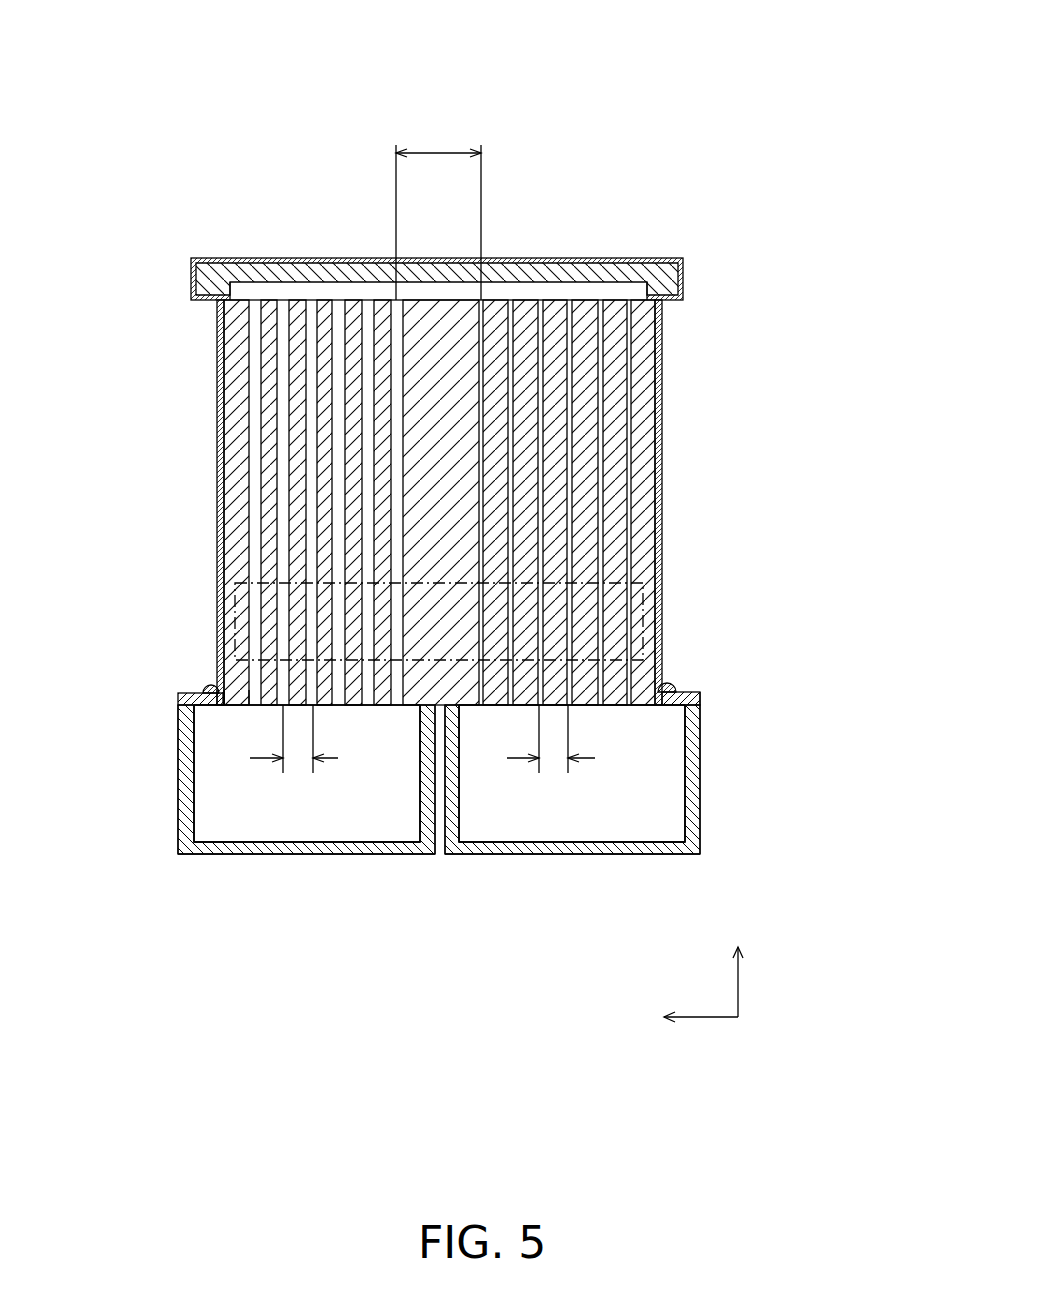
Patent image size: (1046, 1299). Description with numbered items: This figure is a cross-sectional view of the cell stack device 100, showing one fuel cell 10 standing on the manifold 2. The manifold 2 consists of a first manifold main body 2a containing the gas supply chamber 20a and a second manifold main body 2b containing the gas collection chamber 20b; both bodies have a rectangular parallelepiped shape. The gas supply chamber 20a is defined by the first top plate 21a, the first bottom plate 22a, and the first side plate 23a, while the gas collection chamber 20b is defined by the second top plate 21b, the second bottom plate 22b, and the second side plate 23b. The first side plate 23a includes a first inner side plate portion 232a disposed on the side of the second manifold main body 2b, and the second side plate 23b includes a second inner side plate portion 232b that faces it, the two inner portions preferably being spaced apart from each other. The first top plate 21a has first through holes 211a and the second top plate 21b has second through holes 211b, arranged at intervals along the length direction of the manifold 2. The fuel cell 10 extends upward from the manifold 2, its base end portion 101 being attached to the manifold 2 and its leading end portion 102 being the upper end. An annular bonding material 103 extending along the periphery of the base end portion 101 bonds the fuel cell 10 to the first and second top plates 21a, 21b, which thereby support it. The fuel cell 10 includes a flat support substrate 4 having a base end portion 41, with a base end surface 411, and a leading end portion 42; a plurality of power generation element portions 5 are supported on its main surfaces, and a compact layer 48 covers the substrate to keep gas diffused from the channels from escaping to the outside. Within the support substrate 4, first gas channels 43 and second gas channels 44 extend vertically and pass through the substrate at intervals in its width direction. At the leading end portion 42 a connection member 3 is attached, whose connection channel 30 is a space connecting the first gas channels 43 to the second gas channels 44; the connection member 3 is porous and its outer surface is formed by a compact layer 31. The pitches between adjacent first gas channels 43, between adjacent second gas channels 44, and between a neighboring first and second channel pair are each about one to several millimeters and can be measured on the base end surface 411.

The cell stack device 100 is at (627, 133).
The connection member 3 is at (668, 254).
The connection channel 30 is at (548, 283).
The compact layer 31 is at (563, 262).
The fuel cell 10 is at (195, 433).
The support substrate 4 is at (220, 384).
The leading end portion 42 is at (216, 322).
The first gas channel 43 is at (243, 496).
The second gas channel 44 is at (640, 493).
The compact layer 48 is at (216, 567).
The base end portion 41 is at (217, 673).
The base end surface 411 is at (230, 707).
The power generation element portion 5 is at (235, 601).
The base end portion 101 is at (670, 639).
The leading end portion 102 is at (670, 326).
The bonding material 103 is at (670, 678).
The manifold 2 is at (166, 855).
The first manifold main body 2a is at (158, 762).
The second manifold main body 2b is at (730, 753).
The gas supply chamber 20a is at (328, 822).
The gas collection chamber 20b is at (602, 822).
The first top plate 21a is at (203, 684).
The second top plate 21b is at (680, 690).
The first through hole 211a is at (248, 707).
The second through hole 211b is at (633, 707).
The first bottom plate 22a is at (313, 856).
The second bottom plate 22b is at (563, 856).
The first side plate 23a is at (178, 817).
The second side plate 23b is at (702, 808).
The first inner side plate portion 232a is at (420, 803).
The second inner side plate portion 232b is at (460, 803).